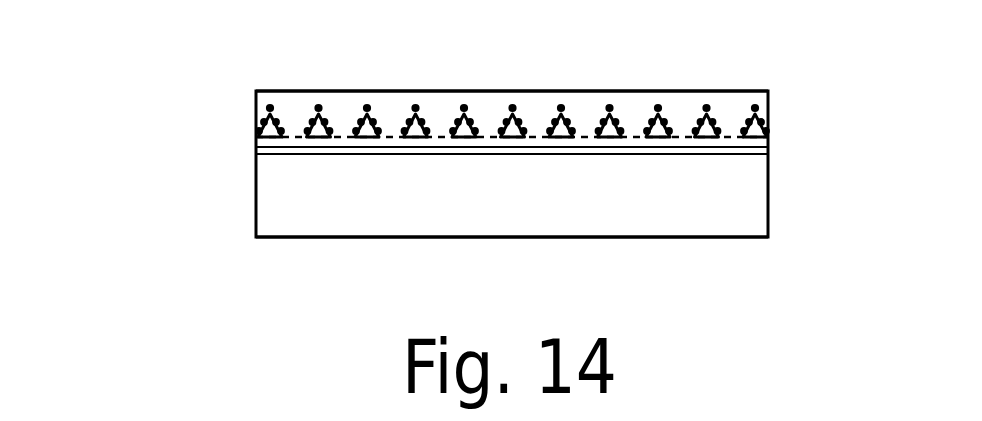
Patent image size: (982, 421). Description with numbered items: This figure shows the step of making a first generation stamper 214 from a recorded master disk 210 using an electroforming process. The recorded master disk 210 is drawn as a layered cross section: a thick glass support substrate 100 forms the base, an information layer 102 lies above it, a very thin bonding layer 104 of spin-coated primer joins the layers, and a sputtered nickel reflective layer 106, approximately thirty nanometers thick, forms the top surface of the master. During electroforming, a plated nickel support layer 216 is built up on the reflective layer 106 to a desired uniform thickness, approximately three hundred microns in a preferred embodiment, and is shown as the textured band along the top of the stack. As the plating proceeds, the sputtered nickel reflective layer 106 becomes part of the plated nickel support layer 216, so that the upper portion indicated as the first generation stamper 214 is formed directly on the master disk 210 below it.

The support substrate 100 is at (630, 208).
The information layer 102 is at (755, 147).
The bonding layer 104 is at (700, 145).
The reflective layer 106 is at (572, 78).
The recorded master disk 210 is at (226, 203).
The first generation stamper 214 is at (208, 114).
The plated nickel support layer 216 is at (532, 105).